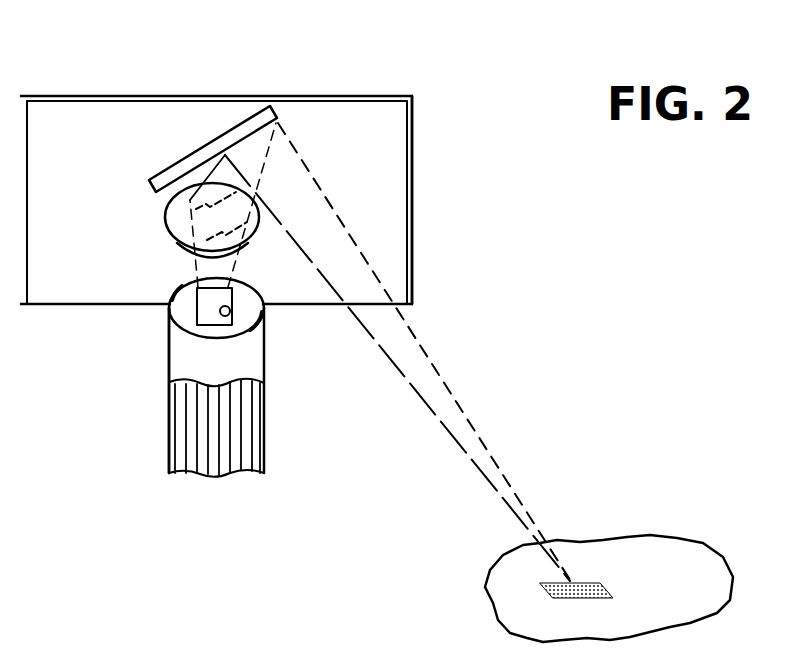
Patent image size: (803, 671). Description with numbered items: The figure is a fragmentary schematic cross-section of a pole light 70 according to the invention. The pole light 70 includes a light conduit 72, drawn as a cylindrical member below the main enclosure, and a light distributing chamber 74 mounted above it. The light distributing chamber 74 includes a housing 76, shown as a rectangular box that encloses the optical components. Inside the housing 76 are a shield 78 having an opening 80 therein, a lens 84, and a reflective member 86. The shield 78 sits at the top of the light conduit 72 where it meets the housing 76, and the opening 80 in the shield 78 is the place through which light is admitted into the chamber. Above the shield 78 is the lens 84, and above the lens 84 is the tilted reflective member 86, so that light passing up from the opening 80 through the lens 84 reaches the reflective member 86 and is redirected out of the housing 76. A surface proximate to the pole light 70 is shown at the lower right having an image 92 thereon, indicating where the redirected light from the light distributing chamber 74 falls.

The pole light 70 is at (146, 409).
The light conduit 72 is at (183, 438).
The light distributing chamber 74 is at (363, 72).
The housing 76 is at (413, 148).
The shield 78 is at (252, 302).
The opening 80 is at (222, 307).
The lens 84 is at (198, 206).
The reflective member 86 is at (200, 150).
The image 92 is at (585, 582).